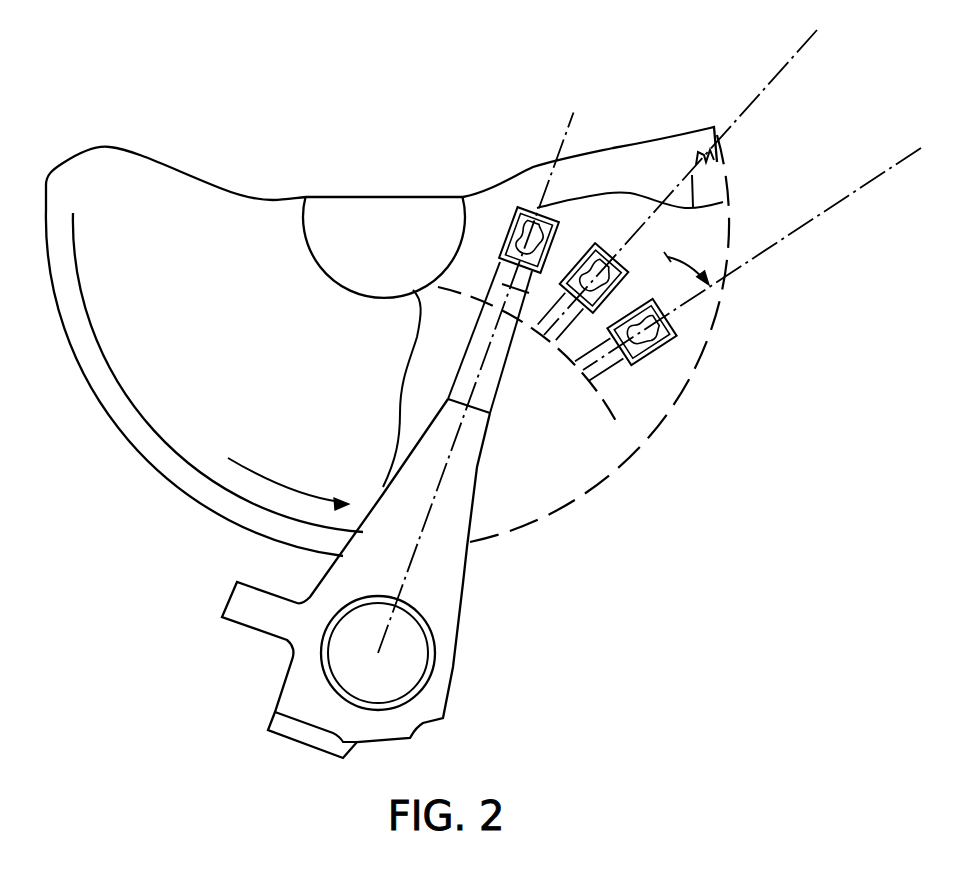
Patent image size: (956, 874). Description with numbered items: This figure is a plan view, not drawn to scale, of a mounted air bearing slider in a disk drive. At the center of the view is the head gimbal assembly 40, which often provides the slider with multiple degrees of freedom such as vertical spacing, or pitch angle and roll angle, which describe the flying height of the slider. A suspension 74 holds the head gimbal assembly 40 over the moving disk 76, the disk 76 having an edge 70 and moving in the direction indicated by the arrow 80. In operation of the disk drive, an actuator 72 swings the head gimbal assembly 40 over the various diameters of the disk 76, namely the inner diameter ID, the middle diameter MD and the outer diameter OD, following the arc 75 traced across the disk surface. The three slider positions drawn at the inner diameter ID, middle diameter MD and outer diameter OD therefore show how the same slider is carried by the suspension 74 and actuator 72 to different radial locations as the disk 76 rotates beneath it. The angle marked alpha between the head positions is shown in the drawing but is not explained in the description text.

The head gimbal assembly 40 is at (557, 203).
The edge 70 is at (147, 460).
The actuator 72 is at (455, 670).
The suspension 74 is at (497, 383).
The arc 75 is at (593, 393).
The disk 76 is at (194, 354).
The arrow 80 is at (292, 483).
The inner diameter ID is at (510, 224).
The middle diameter MD is at (618, 262).
The outer diameter OD is at (677, 333).
The skew angle alpha is at (687, 258).